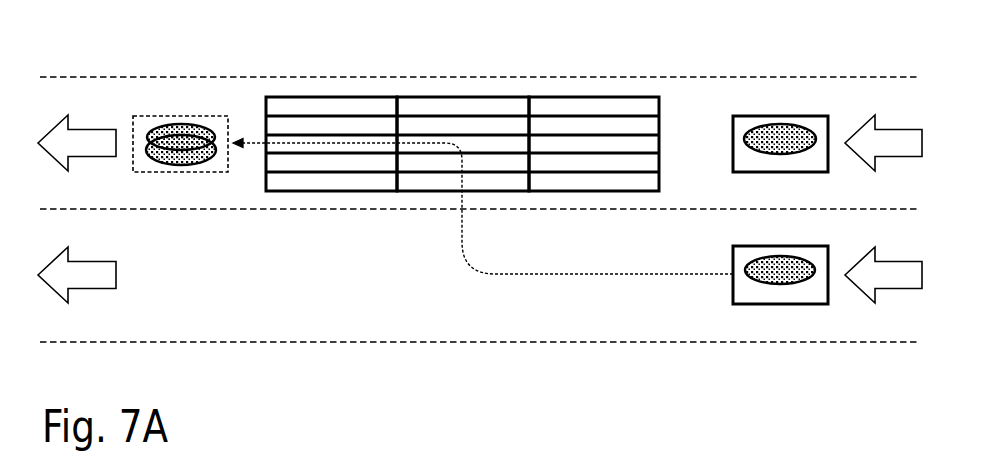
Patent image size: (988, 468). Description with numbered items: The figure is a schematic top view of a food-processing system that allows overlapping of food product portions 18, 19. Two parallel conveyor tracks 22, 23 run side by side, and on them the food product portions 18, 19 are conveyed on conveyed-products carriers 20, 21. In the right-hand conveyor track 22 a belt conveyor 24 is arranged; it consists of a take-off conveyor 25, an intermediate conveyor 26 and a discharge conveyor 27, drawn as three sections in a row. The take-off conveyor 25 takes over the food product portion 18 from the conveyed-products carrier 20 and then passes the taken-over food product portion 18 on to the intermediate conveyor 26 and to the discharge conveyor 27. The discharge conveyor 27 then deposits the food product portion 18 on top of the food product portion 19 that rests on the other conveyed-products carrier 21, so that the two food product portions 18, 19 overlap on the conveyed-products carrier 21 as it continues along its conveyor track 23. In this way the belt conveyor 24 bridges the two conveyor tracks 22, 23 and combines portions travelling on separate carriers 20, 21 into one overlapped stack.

The food product portion 18 is at (206, 132).
The food product portion 19 is at (190, 125).
The conveyed-products carrier 20 is at (752, 117).
The conveyed-products carrier 21 is at (148, 116).
The conveyor track 22 is at (688, 135).
The conveyor track 23 is at (564, 312).
The belt conveyor 24 is at (462, 98).
The take-off conveyor 25 is at (594, 97).
The intermediate conveyor 26 is at (452, 97).
The discharge conveyor 27 is at (335, 97).